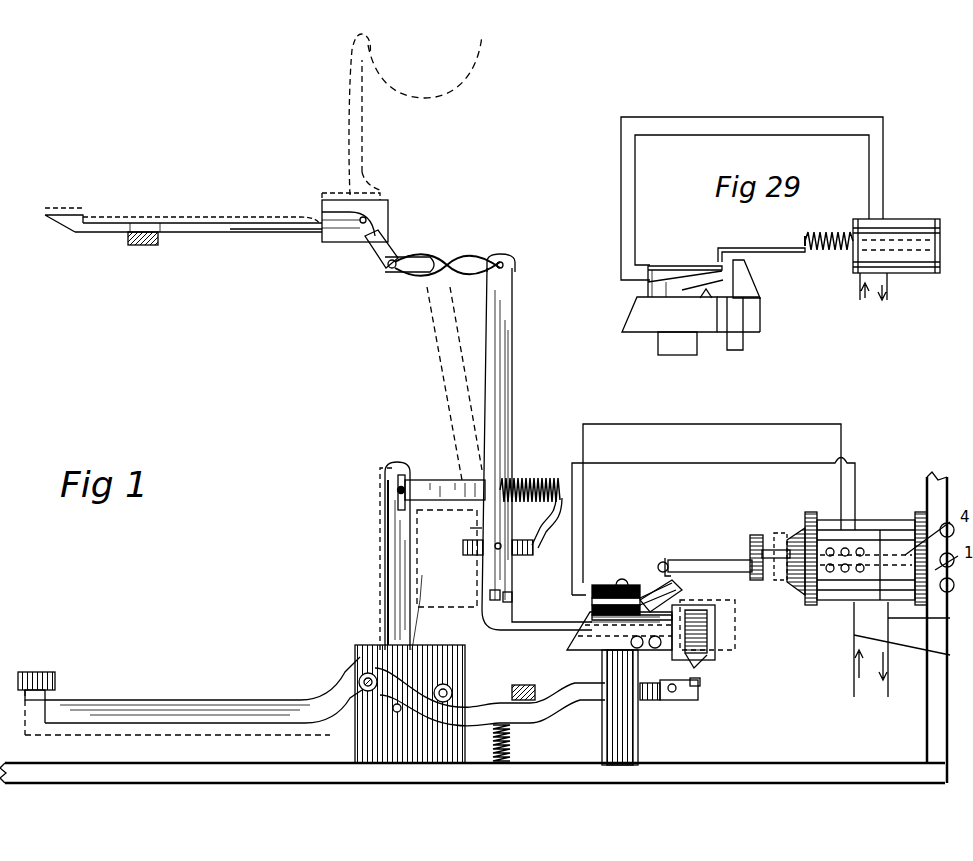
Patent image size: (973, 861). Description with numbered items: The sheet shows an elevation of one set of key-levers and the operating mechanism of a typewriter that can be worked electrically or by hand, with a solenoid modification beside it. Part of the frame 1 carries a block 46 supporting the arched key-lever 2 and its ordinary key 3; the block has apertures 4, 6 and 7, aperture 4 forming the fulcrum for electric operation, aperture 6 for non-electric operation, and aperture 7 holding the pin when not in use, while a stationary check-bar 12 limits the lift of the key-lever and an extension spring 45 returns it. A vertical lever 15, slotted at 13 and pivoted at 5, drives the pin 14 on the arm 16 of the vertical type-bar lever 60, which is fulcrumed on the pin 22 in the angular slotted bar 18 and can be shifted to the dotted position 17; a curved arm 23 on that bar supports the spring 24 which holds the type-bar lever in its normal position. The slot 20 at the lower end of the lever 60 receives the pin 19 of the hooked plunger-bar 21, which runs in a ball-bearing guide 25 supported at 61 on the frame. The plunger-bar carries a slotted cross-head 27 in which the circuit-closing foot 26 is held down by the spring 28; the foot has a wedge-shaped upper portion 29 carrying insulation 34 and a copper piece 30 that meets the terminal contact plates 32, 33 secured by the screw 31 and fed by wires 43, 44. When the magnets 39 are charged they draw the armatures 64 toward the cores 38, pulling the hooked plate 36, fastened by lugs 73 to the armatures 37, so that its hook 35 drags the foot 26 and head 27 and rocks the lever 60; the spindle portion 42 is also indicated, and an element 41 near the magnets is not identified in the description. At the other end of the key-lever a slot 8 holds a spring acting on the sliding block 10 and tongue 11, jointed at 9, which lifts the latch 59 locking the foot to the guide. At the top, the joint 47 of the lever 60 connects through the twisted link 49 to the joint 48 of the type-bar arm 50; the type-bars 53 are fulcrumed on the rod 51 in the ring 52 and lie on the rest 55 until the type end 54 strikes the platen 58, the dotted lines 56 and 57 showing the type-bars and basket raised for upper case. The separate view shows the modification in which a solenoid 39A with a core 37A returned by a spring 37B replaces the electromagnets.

In FIG. 1, the frame 1 is at (268, 763).
In FIG. 1, the key-lever 2 is at (190, 700).
In FIG. 1, the key 3 is at (45, 670).
In FIG. 1, the aperture 4 is at (355, 662).
In FIG. 1, the pivot 5 is at (412, 640).
In FIG. 1, the aperture 6 is at (448, 678).
In FIG. 1, the aperture 7 is at (395, 712).
In FIG. 1, the horizontal slot 8 is at (650, 700).
In FIG. 1, the stump-joint 9 is at (672, 700).
In FIG. 1, the sliding block 10 is at (695, 702).
In FIG. 1, the tongue 11 is at (700, 686).
In FIG. 1, the check-bar 12 is at (520, 685).
In FIG. 1, the slot 13 is at (395, 470).
In FIG. 1, the pin 14 is at (398, 490).
In FIG. 1, the vertical lever 15 is at (393, 550).
In FIG. 1, the arm 16 is at (436, 480).
In FIG. 1, the dotted lines 17 is at (470, 528).
In FIG. 1, the angular slotted bar 18 is at (463, 550).
In FIG. 1, the pivot pin 19 is at (492, 593).
In FIG. 1, the slot 20 is at (503, 597).
In FIG. 1, the plunger-bar 21 is at (495, 640).
In FIG. 1, the fulcrum pin 22 is at (548, 530).
In FIG. 1, the curved arm 23 is at (563, 493).
In FIG. 1, the spring 24 is at (522, 480).
In FIG. 1, the ball-bearing guide 25 is at (600, 630).
In FIG. 1, the circuit-closing foot 26 is at (712, 666).
In FIG. 1, the cross-head 27 is at (720, 625).
In FIG. 29, the cross-head 27 is at (755, 312).
In FIG. 1, the spring 28 is at (710, 648).
In FIG. 1, the inclined upper portion 29 is at (670, 588).
In FIG. 29, the inclined upper portion 29 is at (745, 281).
In FIG. 1, the copper piece 30 is at (706, 600).
In FIG. 1, the screw 31 is at (623, 580).
In FIG. 29, the screw 31 is at (652, 266).
In FIG. 1, the terminal contact plate 32 is at (600, 585).
In FIG. 29, the terminal contact plate 32 is at (684, 270).
In FIG. 1, the terminal contact plate 33 is at (592, 600).
In FIG. 29, the terminal contact plate 33 is at (655, 285).
In FIG. 1, the insulation lining 34 is at (592, 610).
In FIG. 29, the insulation lining 34 is at (668, 292).
In FIG. 1, the hook 35 is at (661, 563).
In FIG. 1, the hooked plate 36 is at (718, 560).
In FIG. 29, the hooked plate 36 is at (740, 248).
In FIG. 1, the main magnet-armatures 37 is at (758, 545).
In FIG. 29, the core 37A is at (820, 236).
In FIG. 29, the spring 37B is at (830, 252).
In FIG. 1, the magnet cores 38 is at (793, 540).
In FIG. 1, the magnets 39 is at (878, 520).
In FIG. 29, the solenoid 39A is at (902, 219).
In FIG. 1, the wire 41 is at (858, 520).
In FIG. 1, the spindle portion 42 is at (810, 572).
In FIG. 1, the wire 43 is at (722, 424).
In FIG. 29, the wire 43 is at (826, 135).
In FIG. 1, the wire 44 is at (722, 463).
In FIG. 29, the wire 44 is at (782, 117).
In FIG. 1, the spring 45 is at (511, 741).
In FIG. 1, the block 46 is at (345, 744).
In FIG. 1, the pivot 47 is at (512, 262).
In FIG. 1, the joint 48 is at (388, 266).
In FIG. 1, the twisted link 49 is at (440, 258).
In FIG. 1, the type-bar arm 50 is at (386, 238).
In FIG. 1, the rod 51 is at (360, 218).
In FIG. 1, the type-bar ring 52 is at (388, 206).
In FIG. 1, the type-bar 53 is at (358, 116).
In FIG. 1, the type-bar end 54 is at (75, 210).
In FIG. 1, the rest 55 is at (143, 246).
In FIG. 1, the dotted lines 56 is at (210, 213).
In FIG. 1, the dotted lines 57 is at (382, 193).
In FIG. 1, the platen 58 is at (463, 91).
In FIG. 1, the latch 59 is at (692, 602).
In FIG. 29, the latch 59 is at (705, 299).
In FIG. 1, the type-bar lever 60 is at (514, 356).
In FIG. 1, the support 61 is at (639, 750).
In FIG. 29, the support 61 is at (660, 348).
In FIG. 1, the armatures 64 is at (770, 560).
In FIG. 1, the lugs 73 is at (753, 535).